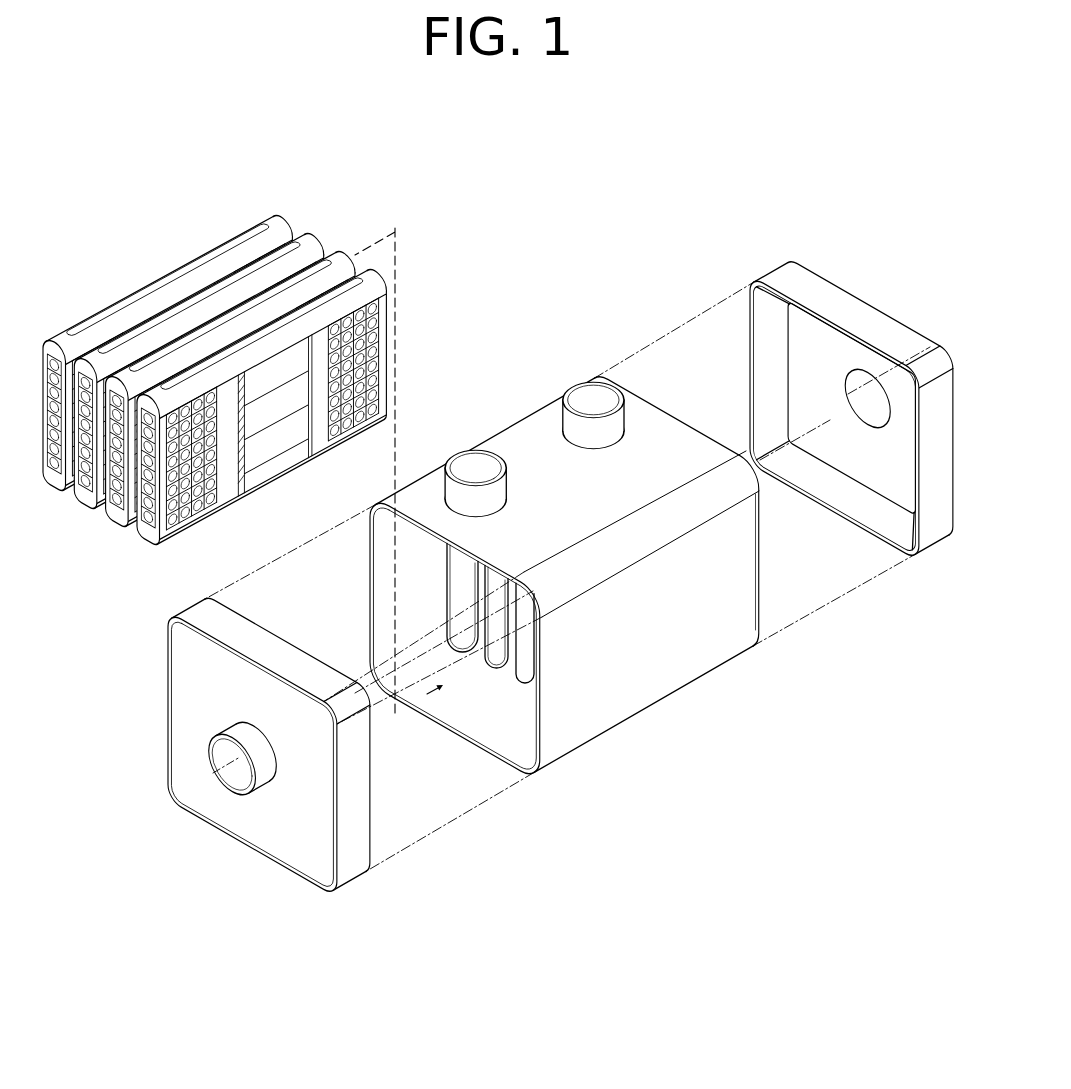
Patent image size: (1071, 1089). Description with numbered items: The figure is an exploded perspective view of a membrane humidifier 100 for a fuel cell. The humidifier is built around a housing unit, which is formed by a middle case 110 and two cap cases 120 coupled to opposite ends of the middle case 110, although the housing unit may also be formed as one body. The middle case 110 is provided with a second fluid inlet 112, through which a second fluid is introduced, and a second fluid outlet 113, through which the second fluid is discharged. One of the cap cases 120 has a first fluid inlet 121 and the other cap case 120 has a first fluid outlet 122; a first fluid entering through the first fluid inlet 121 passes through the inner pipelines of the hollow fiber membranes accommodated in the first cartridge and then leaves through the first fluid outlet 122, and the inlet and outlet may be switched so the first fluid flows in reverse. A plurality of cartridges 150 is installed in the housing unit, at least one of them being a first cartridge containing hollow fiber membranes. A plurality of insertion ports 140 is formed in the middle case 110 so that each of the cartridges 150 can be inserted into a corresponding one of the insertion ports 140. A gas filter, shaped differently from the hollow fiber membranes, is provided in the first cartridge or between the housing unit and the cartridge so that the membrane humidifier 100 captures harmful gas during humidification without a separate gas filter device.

The membrane humidifier 100 is at (498, 521).
The middle case 110 is at (564, 597).
The second fluid inlet 112 is at (472, 467).
The second fluid outlet 113 is at (592, 396).
The cap case 120 is at (530, 571).
The first fluid inlet 121 is at (246, 763).
The first fluid outlet 122 is at (866, 380).
The insertion ports 140 is at (507, 670).
The cartridges 150 is at (312, 212).